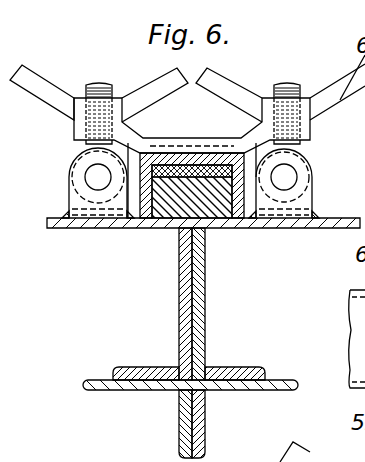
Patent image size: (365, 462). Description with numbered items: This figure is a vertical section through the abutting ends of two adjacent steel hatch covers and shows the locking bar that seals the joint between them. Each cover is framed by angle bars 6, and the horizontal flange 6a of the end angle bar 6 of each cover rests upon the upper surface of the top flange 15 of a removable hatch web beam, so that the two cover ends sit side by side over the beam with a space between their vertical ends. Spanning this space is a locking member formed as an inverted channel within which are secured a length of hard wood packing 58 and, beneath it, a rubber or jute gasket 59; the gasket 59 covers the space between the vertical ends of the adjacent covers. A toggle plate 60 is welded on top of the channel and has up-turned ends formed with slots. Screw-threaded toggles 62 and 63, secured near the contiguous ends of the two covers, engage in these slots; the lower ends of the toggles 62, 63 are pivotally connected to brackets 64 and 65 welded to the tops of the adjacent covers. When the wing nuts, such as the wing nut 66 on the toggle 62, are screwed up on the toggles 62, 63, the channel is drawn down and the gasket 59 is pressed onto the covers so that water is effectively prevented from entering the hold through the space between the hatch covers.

The angle bar 6 is at (181, 298).
The horizontal flange 6a is at (160, 375).
The top flange 15 is at (137, 390).
The hard wood packing 58 is at (197, 172).
The gasket 59 is at (183, 218).
The toggle plate 60 is at (203, 152).
The toggle 62 is at (97, 82).
The toggle 63 is at (286, 82).
The bracket 64 is at (85, 197).
The bracket 65 is at (298, 206).
The wing nut 66 is at (36, 91).